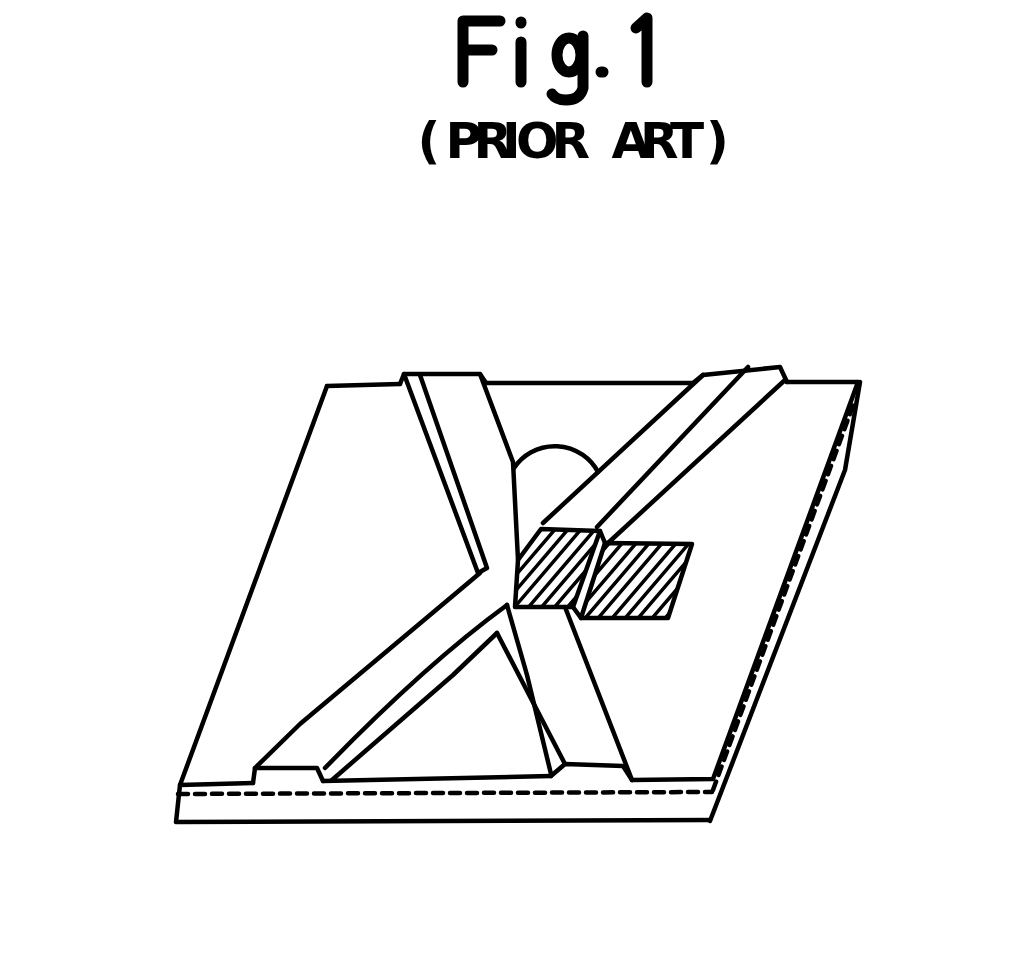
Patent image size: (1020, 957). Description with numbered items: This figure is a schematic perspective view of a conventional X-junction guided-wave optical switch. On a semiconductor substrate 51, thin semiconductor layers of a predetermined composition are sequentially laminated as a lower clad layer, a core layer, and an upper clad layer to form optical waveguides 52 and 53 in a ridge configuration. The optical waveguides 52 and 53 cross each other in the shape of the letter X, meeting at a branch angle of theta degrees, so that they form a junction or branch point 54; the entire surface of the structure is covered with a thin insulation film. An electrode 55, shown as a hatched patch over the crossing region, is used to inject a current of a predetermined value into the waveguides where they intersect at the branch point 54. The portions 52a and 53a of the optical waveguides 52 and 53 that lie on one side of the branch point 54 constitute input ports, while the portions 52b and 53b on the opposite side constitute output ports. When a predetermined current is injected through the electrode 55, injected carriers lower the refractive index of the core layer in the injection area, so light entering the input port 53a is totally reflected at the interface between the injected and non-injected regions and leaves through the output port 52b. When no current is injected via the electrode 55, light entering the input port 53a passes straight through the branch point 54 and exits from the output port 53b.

The semiconductor substrate 51 is at (232, 812).
The optical waveguide 52 is at (619, 583).
The input port 52a is at (587, 718).
The output port 52b is at (457, 387).
The optical waveguide 53 is at (430, 583).
The input port 53a is at (298, 745).
The output port 53b is at (743, 386).
The branch point 54 is at (514, 462).
The electrode 55 is at (662, 563).